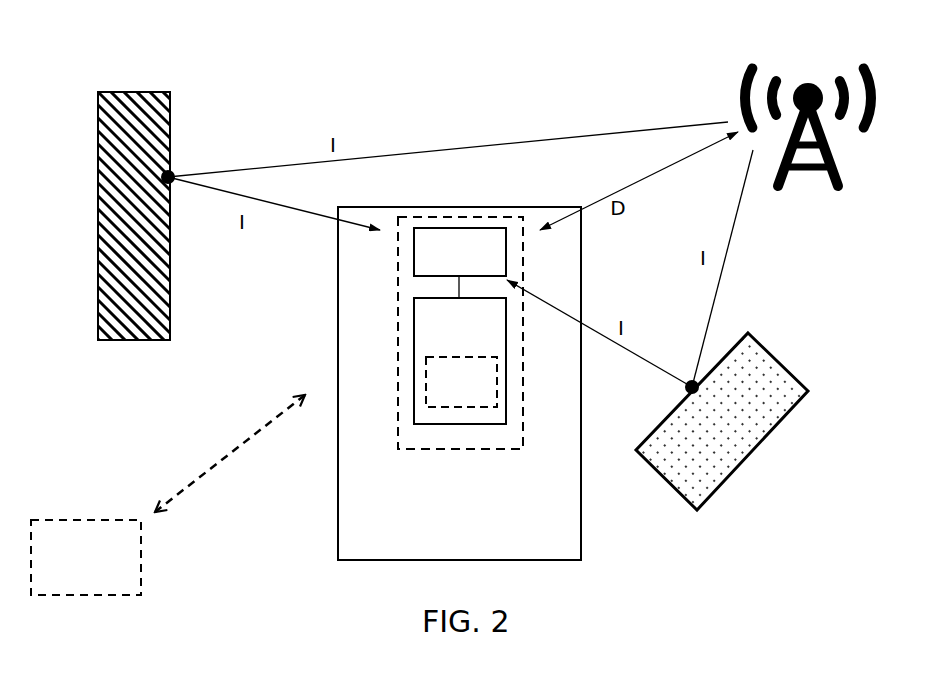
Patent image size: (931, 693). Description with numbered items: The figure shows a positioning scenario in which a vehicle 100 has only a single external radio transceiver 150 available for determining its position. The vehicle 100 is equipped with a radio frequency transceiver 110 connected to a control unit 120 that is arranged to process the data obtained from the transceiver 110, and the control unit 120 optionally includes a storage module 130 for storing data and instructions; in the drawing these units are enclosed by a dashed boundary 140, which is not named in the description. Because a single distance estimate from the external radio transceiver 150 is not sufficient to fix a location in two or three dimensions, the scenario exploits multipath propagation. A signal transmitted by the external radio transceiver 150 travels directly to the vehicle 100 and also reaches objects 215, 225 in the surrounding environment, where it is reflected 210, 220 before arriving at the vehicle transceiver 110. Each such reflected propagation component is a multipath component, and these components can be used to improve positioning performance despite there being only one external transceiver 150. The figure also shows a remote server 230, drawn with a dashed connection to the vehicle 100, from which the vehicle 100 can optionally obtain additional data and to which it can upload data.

The vehicle 100 is at (438, 527).
The radio frequency transceiver 110 is at (441, 266).
The control unit 120 is at (441, 332).
The storage module 130 is at (441, 392).
The receiver unit 140 is at (398, 273).
The external radio transceiver 150 is at (837, 190).
The reflection 210 is at (168, 177).
The object 215 is at (137, 92).
The reflection 220 is at (690, 388).
The object 225 is at (770, 352).
The remote server 230 is at (66, 557).